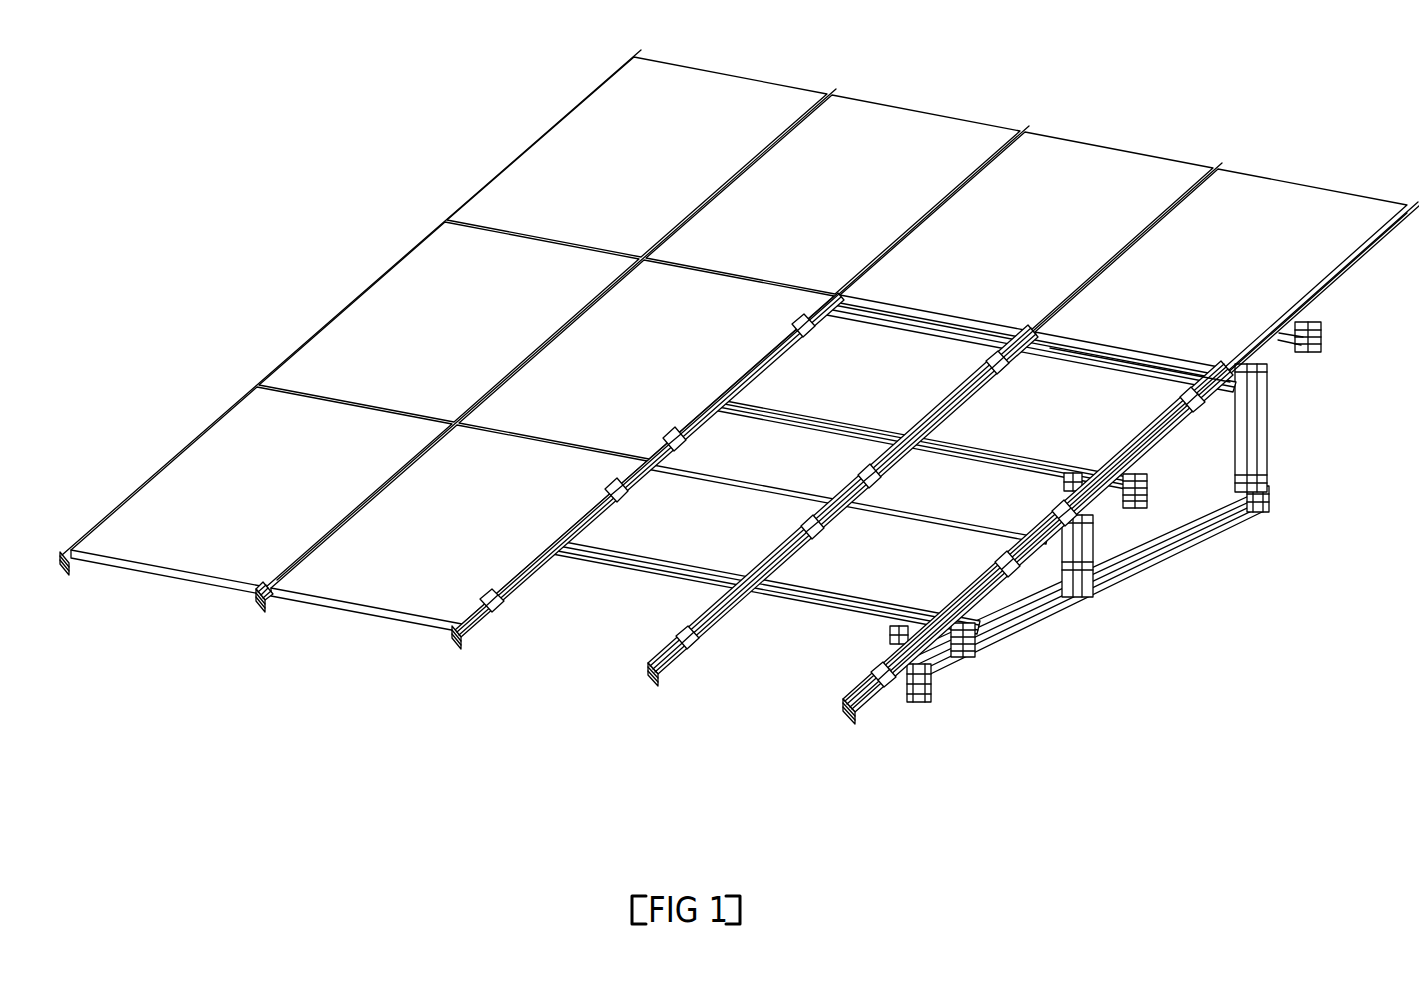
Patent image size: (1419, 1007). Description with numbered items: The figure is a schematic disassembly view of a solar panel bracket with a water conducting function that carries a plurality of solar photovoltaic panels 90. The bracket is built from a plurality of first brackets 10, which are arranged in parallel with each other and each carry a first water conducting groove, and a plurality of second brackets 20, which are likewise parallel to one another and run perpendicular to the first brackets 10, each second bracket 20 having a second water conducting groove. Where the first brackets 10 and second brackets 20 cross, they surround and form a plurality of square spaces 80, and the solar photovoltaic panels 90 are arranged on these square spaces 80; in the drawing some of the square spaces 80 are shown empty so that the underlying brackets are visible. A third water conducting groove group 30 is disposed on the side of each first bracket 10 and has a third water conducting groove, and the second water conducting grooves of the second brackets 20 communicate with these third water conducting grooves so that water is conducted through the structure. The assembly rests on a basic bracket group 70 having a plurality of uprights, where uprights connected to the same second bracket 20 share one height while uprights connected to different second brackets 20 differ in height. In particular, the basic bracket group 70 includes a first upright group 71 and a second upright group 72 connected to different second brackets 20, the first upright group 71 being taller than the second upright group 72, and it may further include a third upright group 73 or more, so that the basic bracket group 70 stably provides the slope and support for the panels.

The first bracket 10 is at (739, 390).
The second bracket 20 is at (965, 337).
The third water conducting groove group 30 is at (677, 686).
The basic bracket group 70 is at (1122, 512).
The first upright group 71 is at (1268, 432).
The second upright group 72 is at (1090, 548).
The third upright group 73 is at (887, 652).
The square space 80 is at (1123, 398).
The solar photovoltaic panel 90 is at (1085, 160).